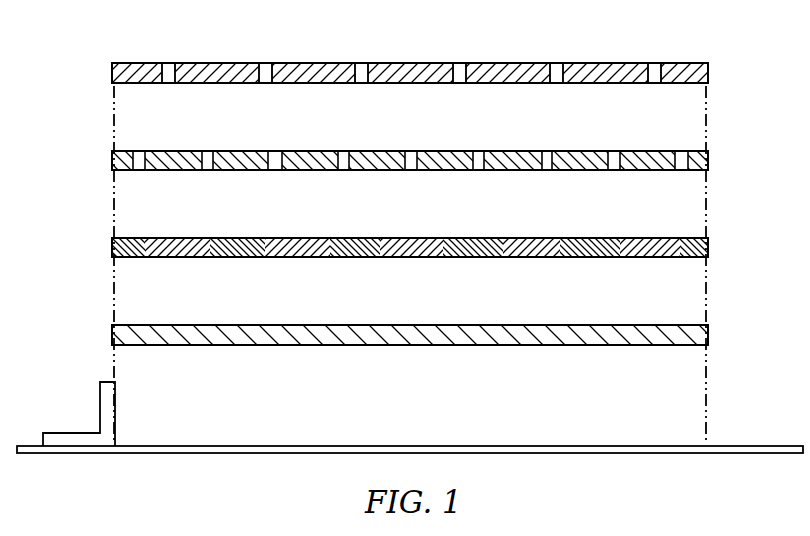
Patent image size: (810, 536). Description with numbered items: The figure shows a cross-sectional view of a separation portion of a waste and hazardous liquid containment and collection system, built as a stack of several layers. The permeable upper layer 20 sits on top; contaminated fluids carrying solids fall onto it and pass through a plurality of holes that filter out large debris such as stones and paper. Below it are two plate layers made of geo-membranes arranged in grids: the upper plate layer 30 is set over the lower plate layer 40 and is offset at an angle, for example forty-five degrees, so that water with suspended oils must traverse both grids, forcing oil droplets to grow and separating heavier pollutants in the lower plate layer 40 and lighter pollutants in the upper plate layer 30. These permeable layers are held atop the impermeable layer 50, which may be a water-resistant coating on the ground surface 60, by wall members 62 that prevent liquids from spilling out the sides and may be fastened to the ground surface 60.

The upper layer 20 is at (710, 66).
The upper plate layer 30 is at (710, 154).
The lower plate layer 40 is at (710, 241).
The impermeable layer 50 is at (710, 328).
The ground surface 60 is at (647, 450).
The wall members 62 is at (100, 405).